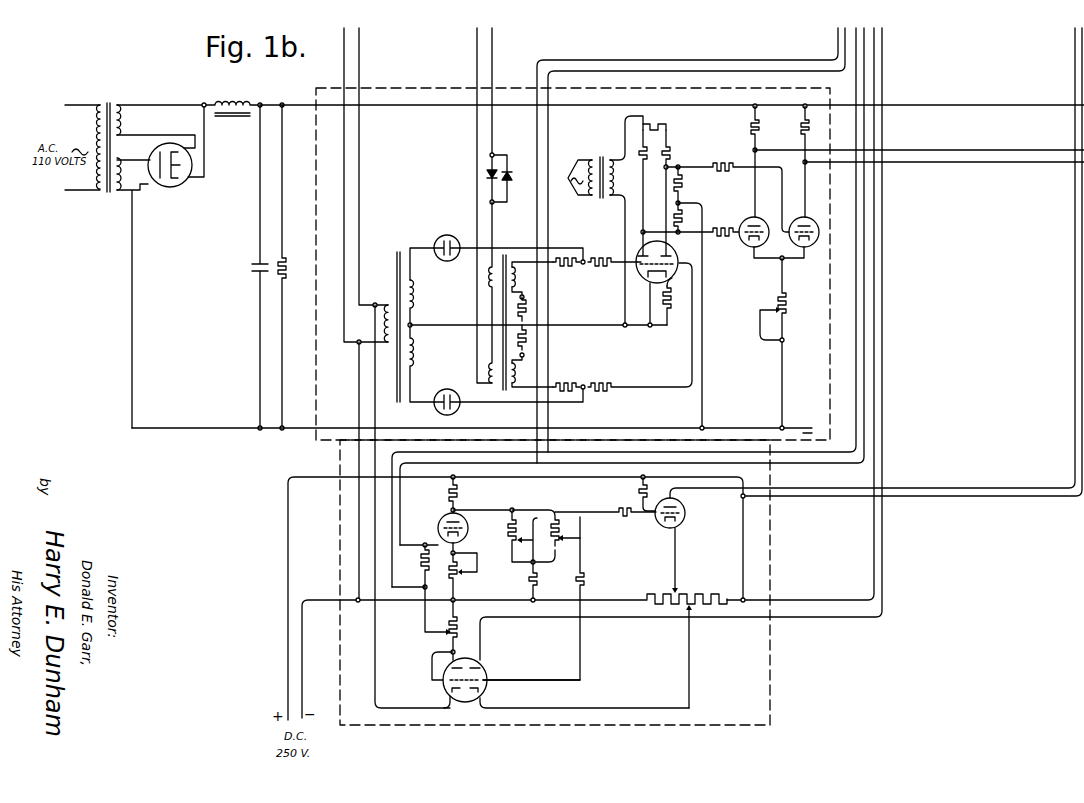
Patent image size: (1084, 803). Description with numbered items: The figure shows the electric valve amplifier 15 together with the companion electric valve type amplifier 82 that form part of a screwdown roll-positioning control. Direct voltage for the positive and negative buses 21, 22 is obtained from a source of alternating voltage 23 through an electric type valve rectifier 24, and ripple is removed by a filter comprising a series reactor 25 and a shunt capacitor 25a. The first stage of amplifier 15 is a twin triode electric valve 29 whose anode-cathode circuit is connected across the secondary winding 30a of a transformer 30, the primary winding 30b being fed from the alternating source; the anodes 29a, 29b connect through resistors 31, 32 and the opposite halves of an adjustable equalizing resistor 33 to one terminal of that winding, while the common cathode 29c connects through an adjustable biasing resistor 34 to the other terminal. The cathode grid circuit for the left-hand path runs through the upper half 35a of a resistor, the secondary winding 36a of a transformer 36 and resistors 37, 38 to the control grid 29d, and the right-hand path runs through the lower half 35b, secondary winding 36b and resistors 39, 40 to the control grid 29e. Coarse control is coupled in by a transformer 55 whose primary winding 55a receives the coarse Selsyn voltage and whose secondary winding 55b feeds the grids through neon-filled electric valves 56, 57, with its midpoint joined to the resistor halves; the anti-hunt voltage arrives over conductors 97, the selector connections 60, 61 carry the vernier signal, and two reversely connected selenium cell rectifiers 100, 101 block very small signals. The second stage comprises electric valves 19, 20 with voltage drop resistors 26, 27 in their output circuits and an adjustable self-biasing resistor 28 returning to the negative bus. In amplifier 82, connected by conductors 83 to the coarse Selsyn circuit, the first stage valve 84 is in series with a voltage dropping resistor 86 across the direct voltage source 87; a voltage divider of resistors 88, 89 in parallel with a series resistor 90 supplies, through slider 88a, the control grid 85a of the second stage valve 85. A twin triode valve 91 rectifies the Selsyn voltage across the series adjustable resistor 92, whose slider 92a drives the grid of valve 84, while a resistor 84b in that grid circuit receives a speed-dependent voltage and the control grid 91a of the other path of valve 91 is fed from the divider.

The electric type valve amplifier 15 is at (413, 173).
The electric valve 19 is at (749, 219).
The electric valve 20 is at (809, 220).
The positive bus 21 is at (292, 102).
The negative bus 22 is at (293, 426).
The source of alternating voltage 23 is at (70, 104).
The electric type valve rectifier 24 is at (180, 181).
The series reactor 25 is at (232, 101).
The shunt capacitor 25a is at (251, 271).
The voltage drop resistor 26 is at (752, 129).
The voltage drop resistor 27 is at (802, 129).
The adjustable self-biasing resistor 28 is at (786, 311).
The twin triode electric valve 29 is at (640, 250).
The anode 29a is at (665, 240).
The anode 29b is at (678, 246).
The common cathode 29c is at (648, 304).
The control grid 29d is at (643, 279).
The control grid 29e is at (676, 278).
The transformer 30 is at (600, 157).
The secondary winding 30a is at (615, 178).
The primary winding 30b is at (598, 198).
The resistor 31 is at (641, 148).
The resistor 32 is at (668, 150).
The adjustable equalizing resistor 33 is at (665, 125).
The adjustable biasing resistor 34 is at (672, 313).
The upper half of resistor 35a is at (536, 309).
The lower half of resistor 35b is at (536, 337).
The transformer 36 is at (501, 296).
The secondary winding 36a is at (516, 280).
The secondary winding 36b is at (516, 373).
The resistor 37 is at (566, 274).
The resistor 38 is at (612, 274).
The resistor 39 is at (566, 378).
The resistor 40 is at (640, 327).
The transformer 55 is at (398, 252).
The primary winding 55a is at (384, 305).
The secondary winding 55b is at (414, 298).
The electric valve 56 is at (447, 236).
The electric valve 57 is at (447, 389).
The connection 60 is at (346, 49).
The connection 61 is at (490, 47).
The electric valve type amplifier 82 is at (578, 496).
The conductors 83 is at (373, 383).
The first stage valve 84 is at (444, 520).
The resistor 84b is at (421, 573).
The second stage valve 85 is at (681, 512).
The control grid 85a is at (660, 525).
The voltage dropping resistor 86 is at (459, 498).
The direct voltage source 87 is at (286, 675).
The resistor 88 is at (509, 535).
The slider 88a is at (548, 540).
The resistor 89 is at (562, 535).
The resistor 90 is at (529, 582).
The twin triode valve 91 is at (446, 690).
The control grid 91a is at (483, 681).
The series adjustable resistor 92 is at (460, 621).
The slider 92a is at (446, 635).
The conductors 97 is at (836, 42).
The selenium cell rectifier 100 is at (485, 175).
The selenium cell rectifier 101 is at (509, 173).